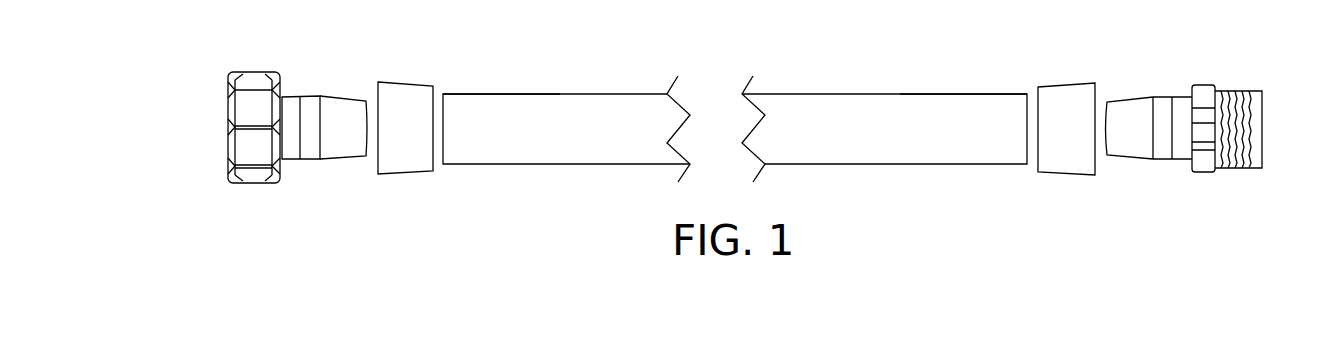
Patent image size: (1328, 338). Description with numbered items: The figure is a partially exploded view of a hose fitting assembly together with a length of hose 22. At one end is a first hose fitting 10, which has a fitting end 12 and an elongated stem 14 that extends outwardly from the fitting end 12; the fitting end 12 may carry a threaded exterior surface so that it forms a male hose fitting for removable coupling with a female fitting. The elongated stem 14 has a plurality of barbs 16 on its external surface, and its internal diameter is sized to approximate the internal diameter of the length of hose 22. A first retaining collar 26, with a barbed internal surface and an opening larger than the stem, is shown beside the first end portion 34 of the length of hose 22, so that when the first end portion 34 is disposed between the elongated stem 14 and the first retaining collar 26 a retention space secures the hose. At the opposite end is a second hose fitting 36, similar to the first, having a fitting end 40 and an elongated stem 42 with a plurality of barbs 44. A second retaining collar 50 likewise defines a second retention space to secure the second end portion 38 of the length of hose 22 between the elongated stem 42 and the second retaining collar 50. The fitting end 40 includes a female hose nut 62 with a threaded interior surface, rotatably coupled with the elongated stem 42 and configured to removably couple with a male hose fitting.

The first hose fitting 10 is at (1146, 81).
The fitting end 12 is at (1243, 181).
The elongated stem 14 is at (1128, 152).
The barbs 16 is at (1172, 96).
The length of hose 22 is at (580, 97).
The first retaining collar 26 is at (1060, 175).
The first end portion 34 is at (995, 99).
The second hose fitting 36 is at (323, 81).
The second end portion 38 is at (494, 99).
The fitting end 40 is at (239, 182).
The elongated stem 42 is at (333, 152).
The barbs 44 is at (300, 158).
The second retaining collar 50 is at (428, 86).
The female hose nut 62 is at (228, 130).